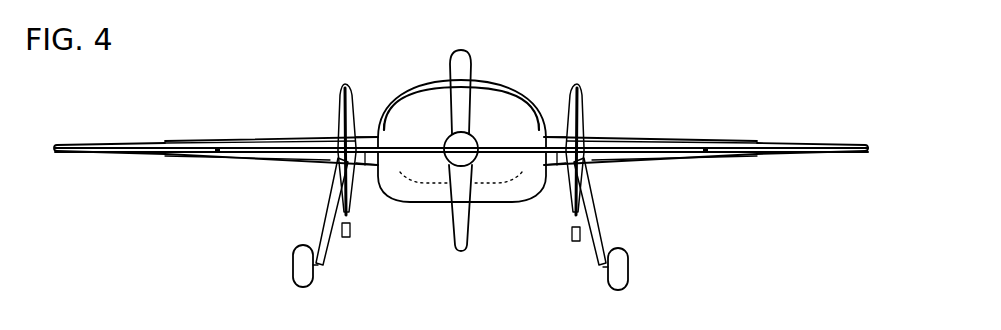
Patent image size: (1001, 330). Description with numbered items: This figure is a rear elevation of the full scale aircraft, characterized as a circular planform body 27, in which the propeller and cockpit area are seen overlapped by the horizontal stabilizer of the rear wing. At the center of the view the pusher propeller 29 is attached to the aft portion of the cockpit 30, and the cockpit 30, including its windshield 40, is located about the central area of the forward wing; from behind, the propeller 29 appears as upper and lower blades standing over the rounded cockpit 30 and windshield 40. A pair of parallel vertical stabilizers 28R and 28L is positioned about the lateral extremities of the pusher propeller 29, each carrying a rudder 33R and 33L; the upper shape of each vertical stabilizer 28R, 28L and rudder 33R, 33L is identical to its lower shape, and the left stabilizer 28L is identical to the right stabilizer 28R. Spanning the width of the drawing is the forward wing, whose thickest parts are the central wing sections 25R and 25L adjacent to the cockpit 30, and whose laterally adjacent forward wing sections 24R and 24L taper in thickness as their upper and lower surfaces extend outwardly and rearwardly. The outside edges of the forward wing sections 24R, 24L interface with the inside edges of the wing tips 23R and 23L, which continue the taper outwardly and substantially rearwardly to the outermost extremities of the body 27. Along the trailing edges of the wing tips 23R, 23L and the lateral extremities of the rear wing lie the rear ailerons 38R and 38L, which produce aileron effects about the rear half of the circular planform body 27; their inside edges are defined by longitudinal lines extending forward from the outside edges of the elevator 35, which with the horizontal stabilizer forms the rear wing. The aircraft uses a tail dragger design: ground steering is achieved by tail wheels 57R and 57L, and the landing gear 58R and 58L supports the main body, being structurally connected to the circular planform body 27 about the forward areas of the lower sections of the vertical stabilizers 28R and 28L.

The circular planform body 27 is at (790, 60).
The pusher propeller 29 is at (461, 62).
The cockpit 30 is at (492, 198).
The windshield 40 is at (519, 97).
The left rudder 33L is at (352, 86).
The right rudder 33R is at (582, 88).
The left vertical stabilizer 28L is at (340, 122).
The right vertical stabilizer 28R is at (584, 134).
The left wing tip 23L is at (130, 140).
The right wing tip 23R is at (768, 143).
The left forward wing section 24L is at (237, 140).
The right forward wing section 24R is at (660, 145).
The left rear aileron 38L is at (182, 153).
The right rear aileron 38R is at (798, 153).
The elevator 35 is at (680, 153).
The left central wing section 25L is at (365, 162).
The right central wing section 25R is at (556, 162).
The left tail wheel 57L is at (352, 231).
The right tail wheel 57R is at (572, 231).
The left landing gear 58L is at (324, 263).
The right landing gear 58R is at (597, 264).